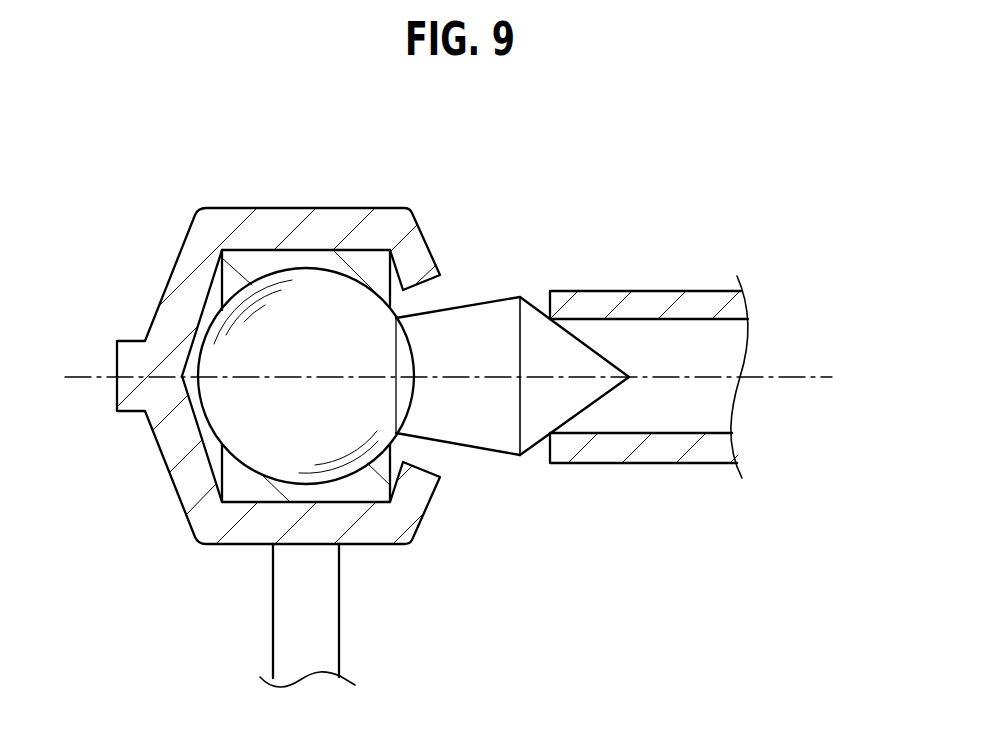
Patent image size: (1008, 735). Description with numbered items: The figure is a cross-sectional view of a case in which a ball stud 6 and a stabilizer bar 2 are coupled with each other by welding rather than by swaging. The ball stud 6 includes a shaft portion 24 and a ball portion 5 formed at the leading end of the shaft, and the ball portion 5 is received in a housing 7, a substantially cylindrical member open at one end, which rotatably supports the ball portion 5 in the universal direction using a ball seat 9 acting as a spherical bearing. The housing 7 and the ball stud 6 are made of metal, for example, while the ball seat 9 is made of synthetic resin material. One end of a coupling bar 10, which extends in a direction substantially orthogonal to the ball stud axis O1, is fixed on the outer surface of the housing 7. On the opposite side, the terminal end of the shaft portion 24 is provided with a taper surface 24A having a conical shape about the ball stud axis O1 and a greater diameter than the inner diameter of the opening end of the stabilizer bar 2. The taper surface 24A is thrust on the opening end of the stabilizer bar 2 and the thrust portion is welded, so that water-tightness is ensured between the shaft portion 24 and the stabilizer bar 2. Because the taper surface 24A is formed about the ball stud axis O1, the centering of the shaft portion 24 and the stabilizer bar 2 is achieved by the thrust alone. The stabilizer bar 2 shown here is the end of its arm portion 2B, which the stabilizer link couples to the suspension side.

The stabilizer bar 2 is at (649, 339).
The arm portion 2B is at (603, 288).
The ball portion 5 is at (245, 405).
The ball stud 6 is at (549, 396).
The housing 7 is at (190, 485).
The ball seat 9 is at (253, 263).
The coupling bar 10 is at (293, 617).
The shaft portion 24 is at (497, 325).
The taper surface 24A is at (597, 352).
The ball stud axis O1 is at (818, 375).